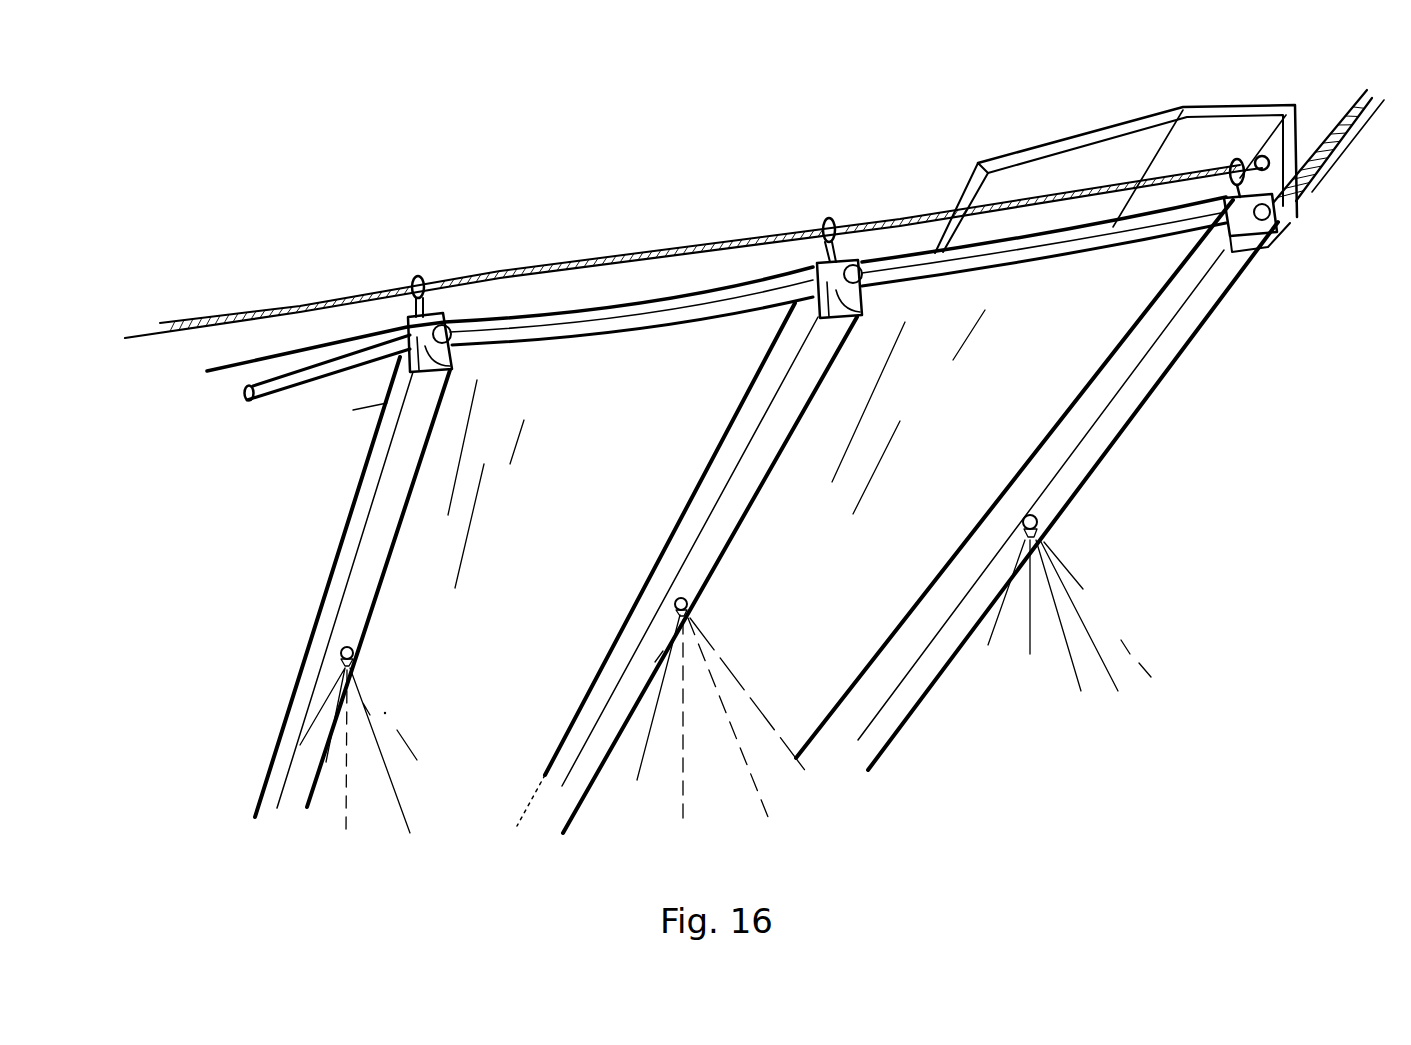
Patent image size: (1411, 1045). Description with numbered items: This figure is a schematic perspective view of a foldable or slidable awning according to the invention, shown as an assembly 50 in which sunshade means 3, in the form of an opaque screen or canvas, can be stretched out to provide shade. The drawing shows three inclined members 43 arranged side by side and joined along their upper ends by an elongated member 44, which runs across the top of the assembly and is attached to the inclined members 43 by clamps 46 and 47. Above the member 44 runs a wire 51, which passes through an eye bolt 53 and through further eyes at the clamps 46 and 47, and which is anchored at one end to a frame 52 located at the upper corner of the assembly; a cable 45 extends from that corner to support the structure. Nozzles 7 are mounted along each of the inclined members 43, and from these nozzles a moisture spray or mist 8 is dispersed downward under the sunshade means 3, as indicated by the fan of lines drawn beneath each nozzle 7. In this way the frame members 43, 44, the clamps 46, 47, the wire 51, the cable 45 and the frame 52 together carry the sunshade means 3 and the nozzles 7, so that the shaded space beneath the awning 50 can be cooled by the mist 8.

The sunshade means 3 is at (207, 371).
The nozzles 7 is at (360, 648).
The moisture spray or mist 8 is at (1065, 675).
The support beam 43 is at (324, 625).
The pipe 44 is at (604, 333).
The support cable 45 is at (1334, 150).
The clamp 46 is at (455, 366).
The clamp 47 is at (863, 297).
The cooling arrangement 50 is at (1133, 760).
The support wire 51 is at (697, 246).
The frame 52 is at (1118, 132).
The eye bolt 53 is at (842, 220).